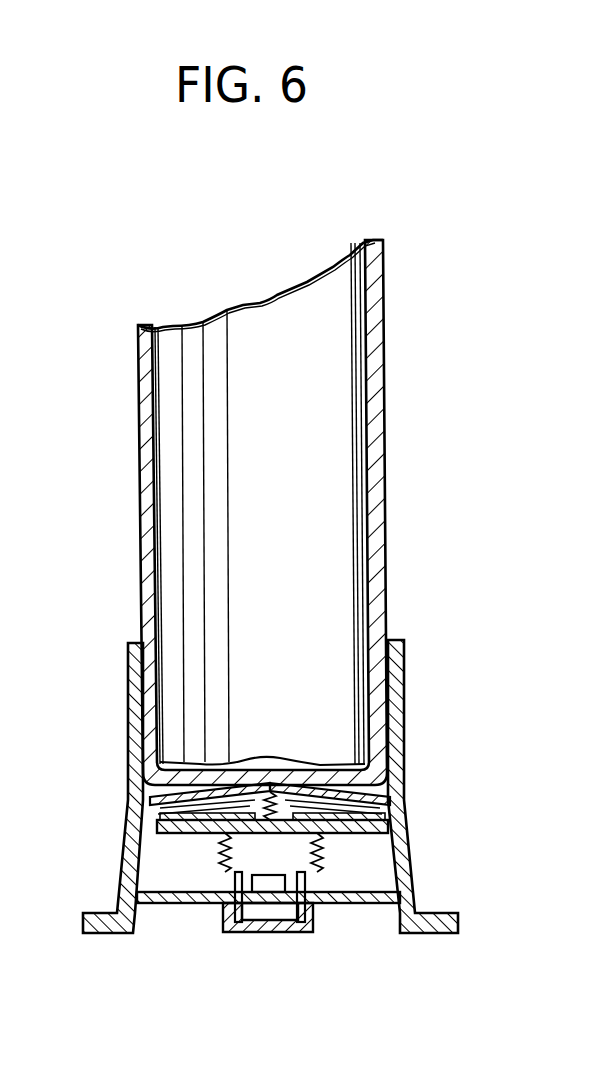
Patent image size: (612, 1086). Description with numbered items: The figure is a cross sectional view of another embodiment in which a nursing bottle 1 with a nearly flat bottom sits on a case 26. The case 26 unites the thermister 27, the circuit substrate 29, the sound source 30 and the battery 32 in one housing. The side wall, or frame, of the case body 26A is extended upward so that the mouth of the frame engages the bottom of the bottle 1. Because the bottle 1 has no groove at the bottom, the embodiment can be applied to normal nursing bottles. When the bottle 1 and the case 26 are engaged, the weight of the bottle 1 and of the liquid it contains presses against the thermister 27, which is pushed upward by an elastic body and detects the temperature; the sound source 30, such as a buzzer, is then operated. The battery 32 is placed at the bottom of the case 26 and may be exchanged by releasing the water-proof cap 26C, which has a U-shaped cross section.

The bottle 1 is at (390, 473).
The case 26 is at (259, 819).
The case body 26A is at (128, 703).
The water-proof cap 26C is at (253, 932).
The thermister 27 is at (397, 813).
The circuit substrate 29 is at (345, 835).
The sound source 30 is at (267, 886).
The battery 32 is at (283, 920).